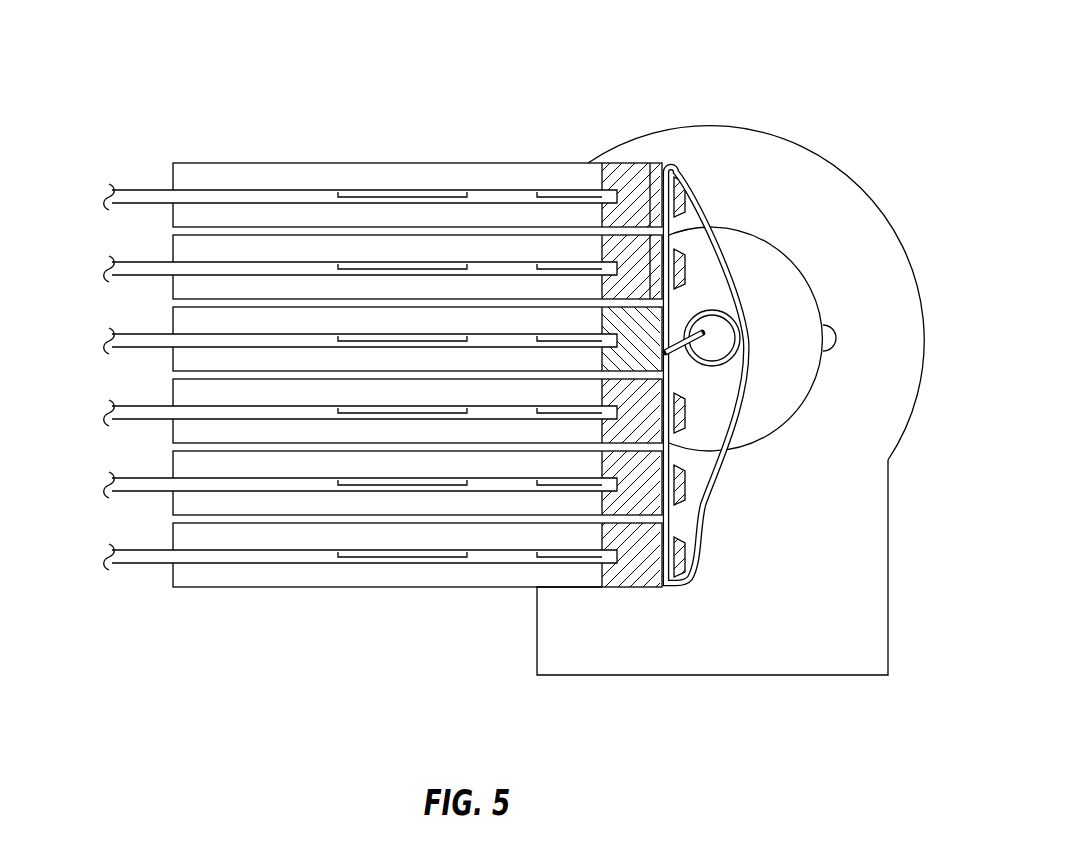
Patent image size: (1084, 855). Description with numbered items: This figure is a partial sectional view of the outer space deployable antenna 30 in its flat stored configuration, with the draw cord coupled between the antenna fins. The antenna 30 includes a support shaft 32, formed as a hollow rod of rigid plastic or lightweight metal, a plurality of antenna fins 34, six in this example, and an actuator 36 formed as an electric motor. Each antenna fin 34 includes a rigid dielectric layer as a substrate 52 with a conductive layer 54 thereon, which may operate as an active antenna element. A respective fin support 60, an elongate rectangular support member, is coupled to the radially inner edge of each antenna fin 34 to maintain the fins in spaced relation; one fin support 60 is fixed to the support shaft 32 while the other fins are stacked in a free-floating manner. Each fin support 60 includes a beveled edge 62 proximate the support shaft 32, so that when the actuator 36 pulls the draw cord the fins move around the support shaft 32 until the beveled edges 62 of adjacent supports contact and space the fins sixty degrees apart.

The antenna 30 is at (501, 372).
The support shaft 32 is at (819, 292).
The antenna fins 34 is at (363, 375).
The actuator 36 is at (749, 400).
The substrate 52 is at (329, 374).
The conductive layer 54 is at (331, 336).
The fin support 60 is at (641, 401).
The beveled edge 62 is at (715, 446).